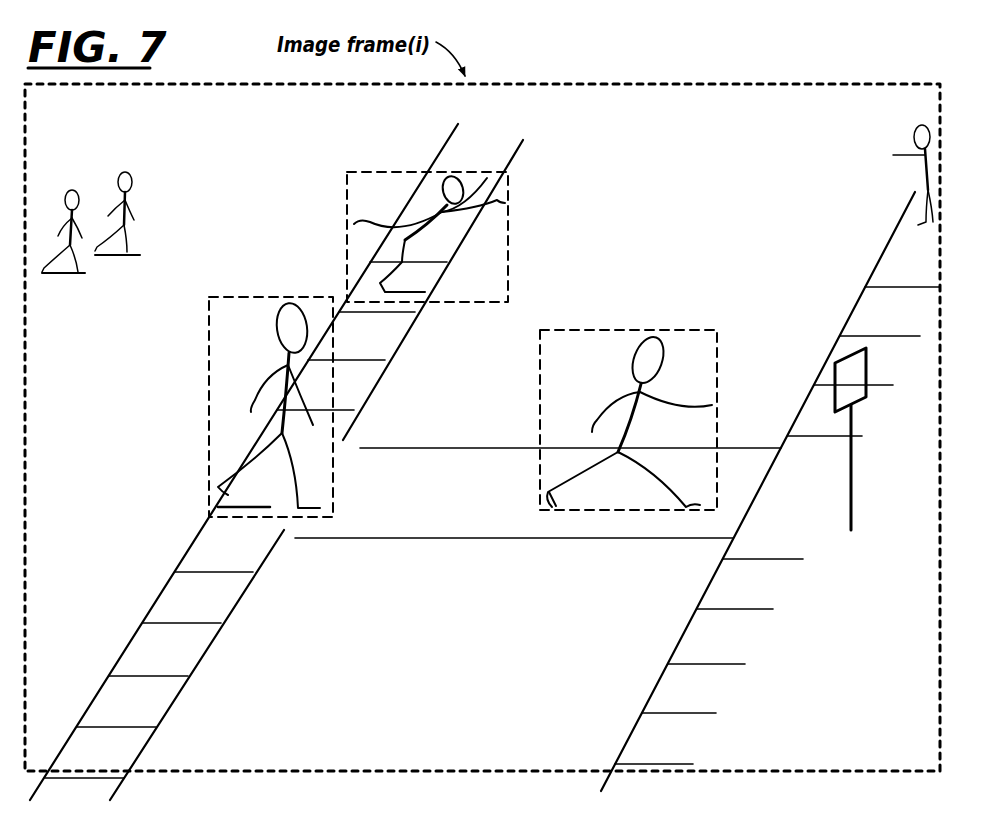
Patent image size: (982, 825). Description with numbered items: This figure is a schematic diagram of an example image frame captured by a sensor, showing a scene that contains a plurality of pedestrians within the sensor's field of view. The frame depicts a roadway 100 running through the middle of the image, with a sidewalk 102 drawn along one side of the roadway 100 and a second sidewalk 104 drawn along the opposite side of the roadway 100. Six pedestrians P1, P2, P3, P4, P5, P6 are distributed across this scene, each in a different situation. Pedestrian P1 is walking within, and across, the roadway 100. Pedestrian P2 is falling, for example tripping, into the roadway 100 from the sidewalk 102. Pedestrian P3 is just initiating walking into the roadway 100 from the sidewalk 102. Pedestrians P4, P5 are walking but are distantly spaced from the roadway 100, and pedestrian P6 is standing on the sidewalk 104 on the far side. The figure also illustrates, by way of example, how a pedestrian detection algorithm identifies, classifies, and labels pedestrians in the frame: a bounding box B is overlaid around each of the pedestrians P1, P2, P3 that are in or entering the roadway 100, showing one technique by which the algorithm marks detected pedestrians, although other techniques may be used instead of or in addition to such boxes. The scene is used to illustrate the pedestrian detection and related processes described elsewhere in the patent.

The roadway 100 is at (420, 690).
The sidewalk 102 is at (172, 566).
The sidewalk 104 is at (672, 640).
The bounding box B is at (347, 196).
The pedestrian P1 is at (636, 347).
The pedestrian P2 is at (445, 180).
The pedestrian P3 is at (279, 304).
The pedestrian P4 is at (70, 188).
The pedestrian P5 is at (125, 172).
The pedestrian P6 is at (912, 134).